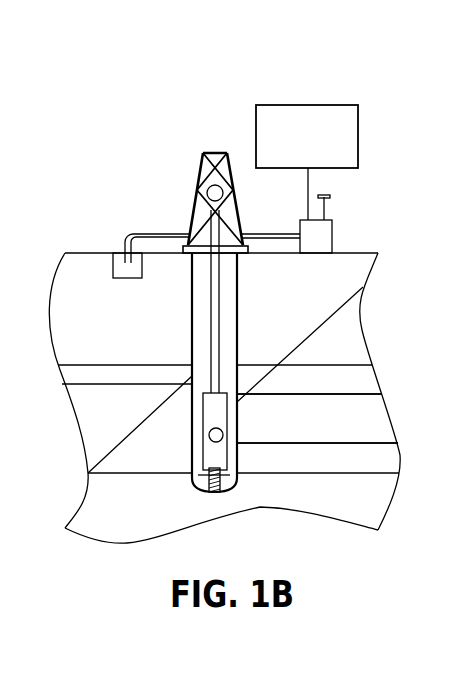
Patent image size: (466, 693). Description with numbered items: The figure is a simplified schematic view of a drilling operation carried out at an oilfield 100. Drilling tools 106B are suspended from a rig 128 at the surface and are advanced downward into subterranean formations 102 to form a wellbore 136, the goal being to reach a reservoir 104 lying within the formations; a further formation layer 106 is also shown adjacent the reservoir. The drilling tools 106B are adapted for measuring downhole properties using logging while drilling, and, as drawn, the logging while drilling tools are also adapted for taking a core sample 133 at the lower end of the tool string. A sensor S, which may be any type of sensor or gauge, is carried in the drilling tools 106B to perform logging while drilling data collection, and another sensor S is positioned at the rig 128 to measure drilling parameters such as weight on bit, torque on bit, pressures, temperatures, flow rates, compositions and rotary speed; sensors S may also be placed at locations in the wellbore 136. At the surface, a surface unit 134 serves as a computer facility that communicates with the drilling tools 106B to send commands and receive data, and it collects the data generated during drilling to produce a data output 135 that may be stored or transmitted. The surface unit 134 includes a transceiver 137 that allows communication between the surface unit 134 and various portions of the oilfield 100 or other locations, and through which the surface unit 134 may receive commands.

The oilfield 100 is at (165, 153).
The subterranean formations 102 is at (263, 364).
The reservoir 104 is at (330, 433).
The formation layer 106 is at (351, 418).
The drilling tools 106B is at (203, 421).
The rig 128 is at (197, 201).
The core sample 133 is at (200, 483).
The surface unit 134 is at (332, 238).
The data output 135 is at (308, 105).
The wellbore 136 is at (235, 270).
The transceiver 137 is at (332, 208).
The sensor S is at (203, 190).